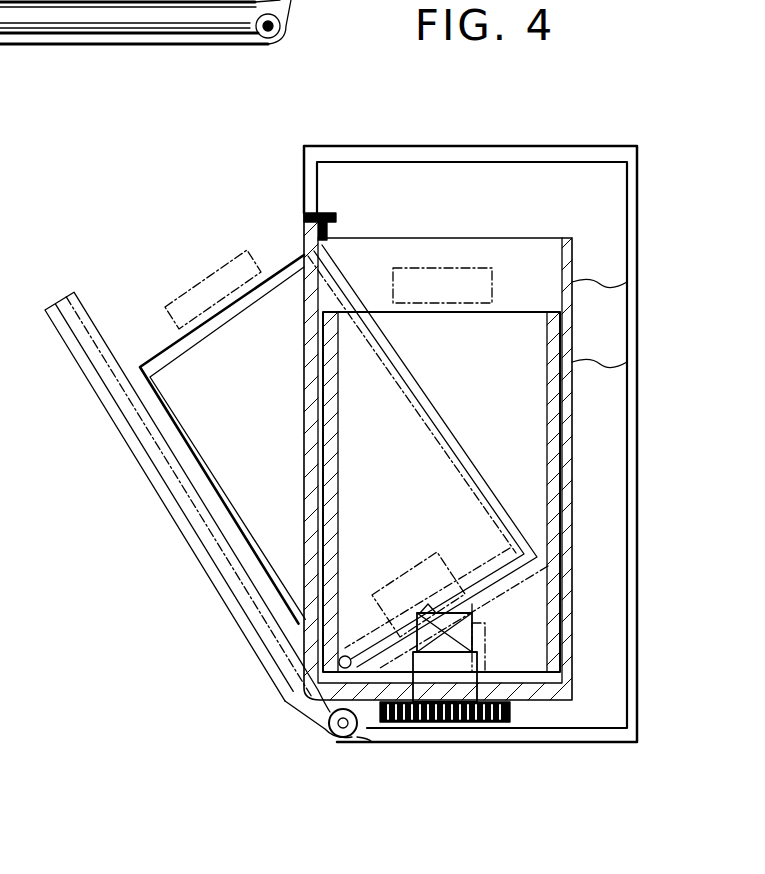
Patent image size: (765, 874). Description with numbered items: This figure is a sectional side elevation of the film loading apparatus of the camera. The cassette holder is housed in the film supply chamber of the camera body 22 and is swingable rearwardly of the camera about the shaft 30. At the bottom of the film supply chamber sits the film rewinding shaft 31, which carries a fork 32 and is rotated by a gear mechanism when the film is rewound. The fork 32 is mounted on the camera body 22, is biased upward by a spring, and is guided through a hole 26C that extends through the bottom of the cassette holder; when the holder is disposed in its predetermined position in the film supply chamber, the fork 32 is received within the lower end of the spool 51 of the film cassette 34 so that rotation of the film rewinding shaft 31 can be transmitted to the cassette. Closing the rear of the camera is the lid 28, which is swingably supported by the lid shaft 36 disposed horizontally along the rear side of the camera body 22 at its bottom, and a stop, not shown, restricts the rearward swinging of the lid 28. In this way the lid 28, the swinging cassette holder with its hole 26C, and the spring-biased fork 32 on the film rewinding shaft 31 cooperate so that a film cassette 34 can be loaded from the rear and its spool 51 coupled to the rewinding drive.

The camera body 22 is at (578, 152).
The lid 28 is at (168, 510).
The hole 26C is at (460, 590).
The shaft 30 is at (380, 745).
The film rewinding shaft 31 is at (463, 664).
The fork 32 is at (457, 638).
The film cassette 34 is at (512, 305).
The lid shaft 36 is at (325, 727).
The spool 51 is at (452, 268).